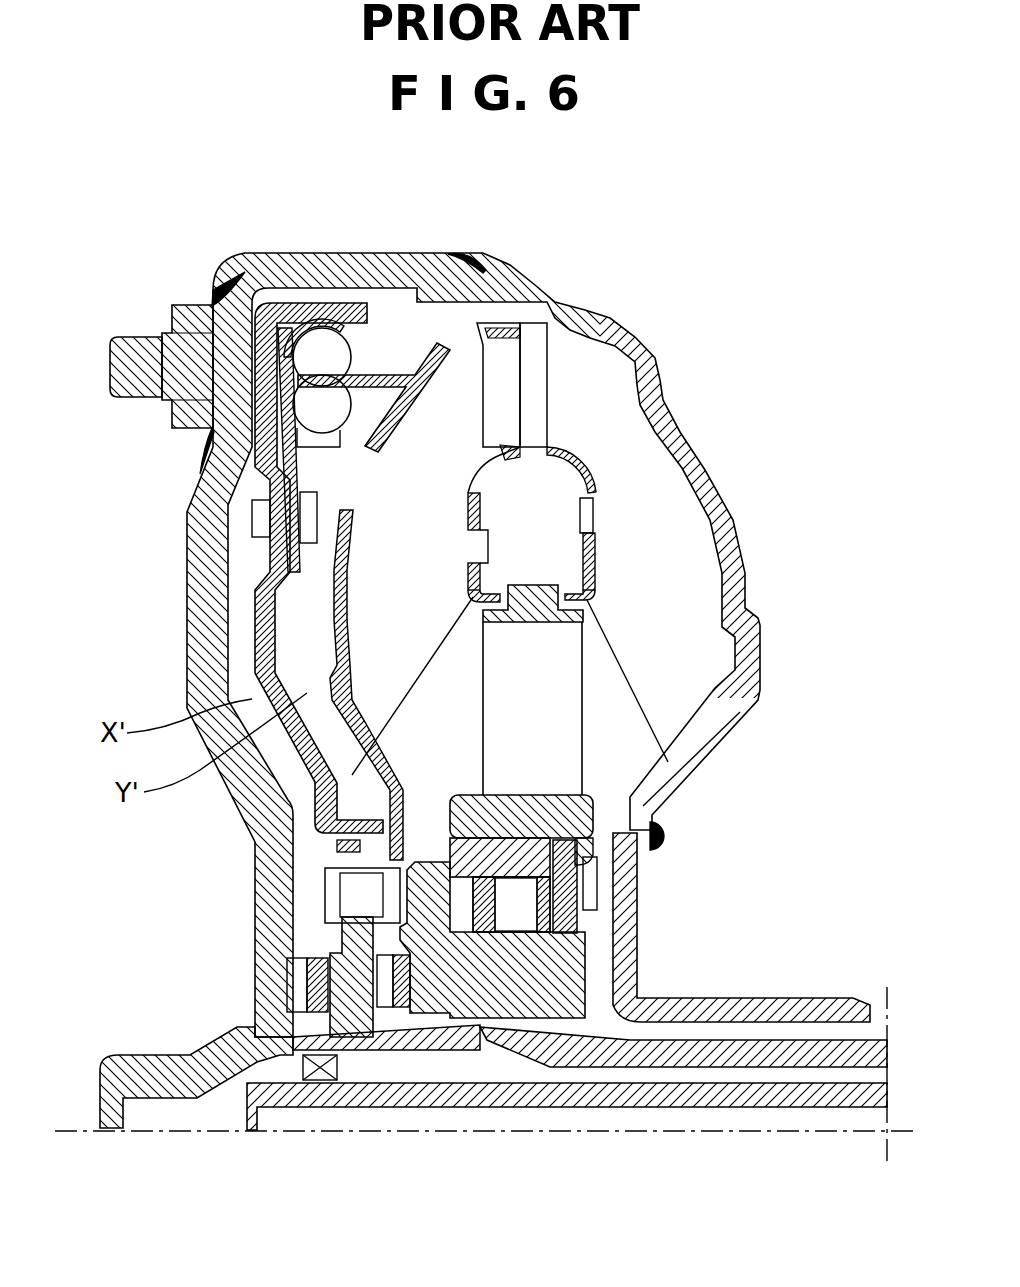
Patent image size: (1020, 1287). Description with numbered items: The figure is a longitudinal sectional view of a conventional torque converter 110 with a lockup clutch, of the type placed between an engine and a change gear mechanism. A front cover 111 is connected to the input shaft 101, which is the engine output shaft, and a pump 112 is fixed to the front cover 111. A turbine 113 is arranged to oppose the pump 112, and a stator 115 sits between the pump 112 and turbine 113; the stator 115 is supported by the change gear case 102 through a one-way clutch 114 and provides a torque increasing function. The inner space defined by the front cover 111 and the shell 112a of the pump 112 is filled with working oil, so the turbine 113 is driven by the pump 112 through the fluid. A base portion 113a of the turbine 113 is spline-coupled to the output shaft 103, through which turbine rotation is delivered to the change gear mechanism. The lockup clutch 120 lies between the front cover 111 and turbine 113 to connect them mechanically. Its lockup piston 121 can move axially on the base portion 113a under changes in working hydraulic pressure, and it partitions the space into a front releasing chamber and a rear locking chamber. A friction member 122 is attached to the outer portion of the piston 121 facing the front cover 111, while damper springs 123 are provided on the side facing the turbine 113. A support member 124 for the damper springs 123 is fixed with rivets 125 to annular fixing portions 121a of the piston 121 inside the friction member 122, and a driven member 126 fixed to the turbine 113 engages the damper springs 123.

The input shaft 101 is at (143, 1070).
The change gear case 102 is at (760, 1048).
The output shaft 103 is at (840, 1092).
The torque converter 110 is at (131, 289).
The front cover 111 is at (187, 512).
The pump 112 is at (653, 515).
The shell 112a is at (700, 418).
The turbine 113 is at (356, 752).
The base portion 113a is at (338, 942).
The one-way clutch 114 is at (523, 919).
The stator 115 is at (590, 750).
The lockup clutch 120 is at (254, 590).
The lockup piston 121 is at (255, 637).
The annular fixing portions 121a is at (290, 550).
The friction member 122 is at (232, 318).
The damper springs 123 is at (338, 413).
The support member 124 is at (297, 470).
The rivets 125 is at (310, 510).
The driven member 126 is at (378, 372).